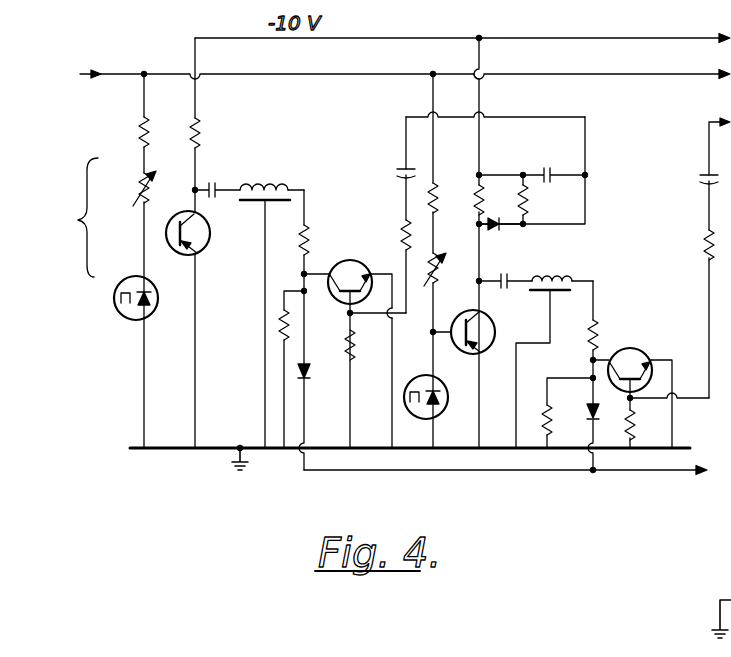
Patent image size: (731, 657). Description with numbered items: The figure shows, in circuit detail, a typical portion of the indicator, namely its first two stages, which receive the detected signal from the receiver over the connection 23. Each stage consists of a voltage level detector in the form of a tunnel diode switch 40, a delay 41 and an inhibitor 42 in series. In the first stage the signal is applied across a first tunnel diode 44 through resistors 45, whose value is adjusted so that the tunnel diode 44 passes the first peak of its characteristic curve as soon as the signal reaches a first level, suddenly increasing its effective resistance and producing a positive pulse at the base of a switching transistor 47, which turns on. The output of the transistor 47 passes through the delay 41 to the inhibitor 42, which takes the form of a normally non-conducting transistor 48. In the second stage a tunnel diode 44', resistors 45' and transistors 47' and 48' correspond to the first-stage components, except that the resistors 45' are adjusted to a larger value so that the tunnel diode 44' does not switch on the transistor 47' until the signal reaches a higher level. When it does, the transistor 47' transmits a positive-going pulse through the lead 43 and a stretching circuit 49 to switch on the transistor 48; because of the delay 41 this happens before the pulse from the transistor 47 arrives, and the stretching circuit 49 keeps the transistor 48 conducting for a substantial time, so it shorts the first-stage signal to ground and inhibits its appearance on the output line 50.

The connection 23 is at (112, 73).
The tunnel diode switch 40 is at (78, 217).
The delay 41 is at (282, 293).
The inhibitor 42 is at (355, 337).
The lead 43 is at (533, 117).
The first tunnel diode 44 is at (125, 313).
The tunnel diode 44' is at (440, 407).
The resistors 45 is at (124, 168).
The resistors 45' is at (450, 217).
The switching transistor 47 is at (203, 243).
The transistor 47' is at (494, 330).
The transistor 48 is at (355, 337).
The transistor 48' is at (651, 375).
The stretching circuit 49 is at (546, 172).
The output line 50 is at (460, 471).